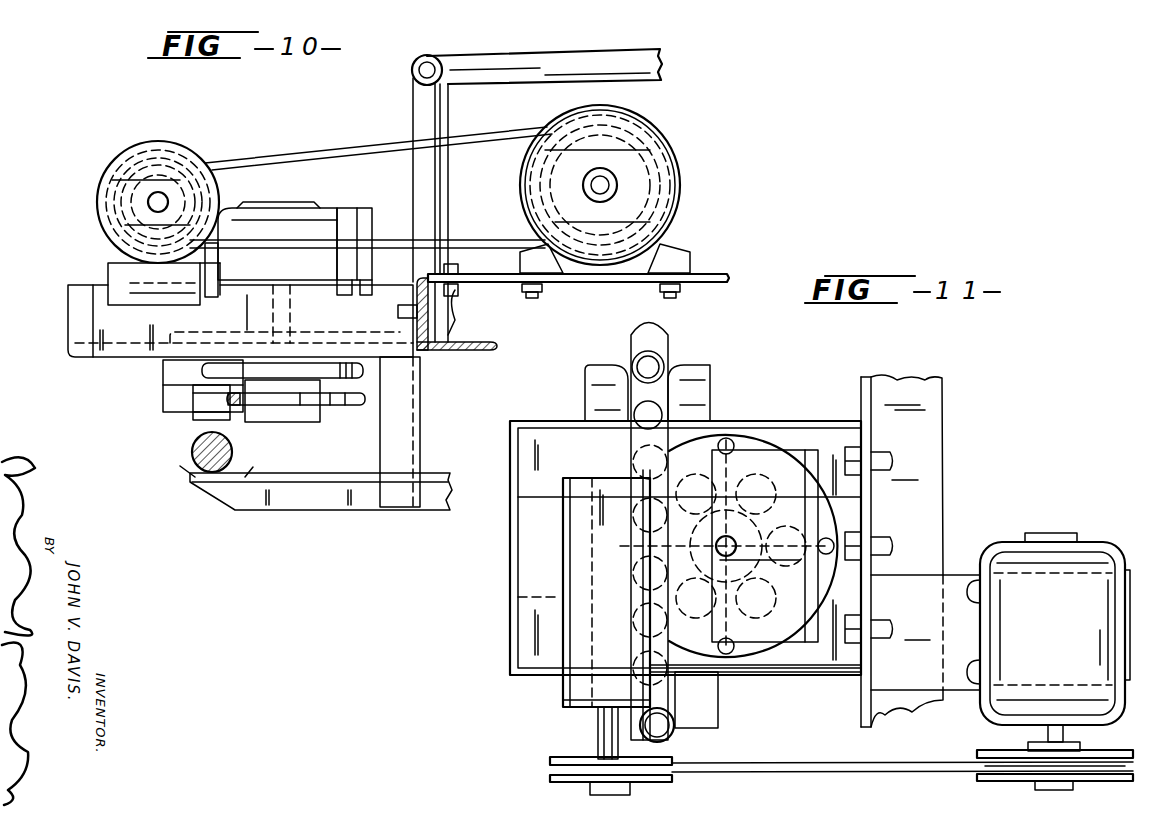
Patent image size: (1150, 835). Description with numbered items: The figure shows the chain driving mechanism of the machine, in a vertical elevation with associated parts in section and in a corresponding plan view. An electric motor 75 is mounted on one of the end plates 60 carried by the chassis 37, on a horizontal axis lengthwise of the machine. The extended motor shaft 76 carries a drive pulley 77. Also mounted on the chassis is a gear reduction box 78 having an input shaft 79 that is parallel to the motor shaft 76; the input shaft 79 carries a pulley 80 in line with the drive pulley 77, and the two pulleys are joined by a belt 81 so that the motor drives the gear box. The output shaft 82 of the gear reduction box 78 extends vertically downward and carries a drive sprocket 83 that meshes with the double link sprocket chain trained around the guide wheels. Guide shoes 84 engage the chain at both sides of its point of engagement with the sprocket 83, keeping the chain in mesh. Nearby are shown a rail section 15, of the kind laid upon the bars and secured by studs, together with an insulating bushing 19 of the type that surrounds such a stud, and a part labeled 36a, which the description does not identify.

In FIG. 10, the rail section 15 is at (196, 441).
In FIG. 11, the rail section 15 is at (660, 340).
In FIG. 10, the insulating bushing 19 is at (150, 205).
In FIG. 10, the chain guide tray 36a is at (188, 474).
In FIG. 10, the chassis 37 is at (588, 32).
In FIG. 10, the end plate 60 is at (722, 273).
In FIG. 11, the end plate 60 is at (950, 585).
In FIG. 10, the electric motor 75 is at (632, 152).
In FIG. 11, the electric motor 75 is at (1055, 555).
In FIG. 10, the motor shaft 76 is at (608, 184).
In FIG. 11, the motor shaft 76 is at (1045, 740).
In FIG. 10, the drive pulley 77 is at (668, 210).
In FIG. 11, the drive pulley 77 is at (978, 780).
In FIG. 10, the gear reduction box 78 is at (343, 212).
In FIG. 11, the gear reduction box 78 is at (775, 465).
In FIG. 11, the input shaft 79 is at (600, 745).
In FIG. 10, the pulley 80 is at (112, 182).
In FIG. 11, the pulley 80 is at (550, 776).
In FIG. 10, the belt 81 is at (372, 148).
In FIG. 11, the belt 81 is at (838, 740).
In FIG. 10, the output shaft 82 is at (291, 322).
In FIG. 11, the output shaft 82 is at (735, 546).
In FIG. 10, the drive sprocket 83 is at (343, 405).
In FIG. 11, the drive sprocket 83 is at (772, 445).
In FIG. 11, the guide shoe 84 is at (585, 387).